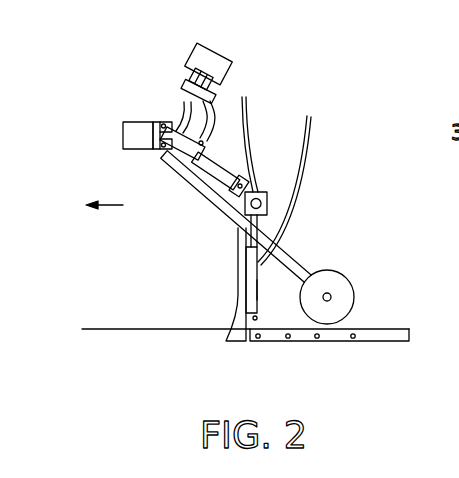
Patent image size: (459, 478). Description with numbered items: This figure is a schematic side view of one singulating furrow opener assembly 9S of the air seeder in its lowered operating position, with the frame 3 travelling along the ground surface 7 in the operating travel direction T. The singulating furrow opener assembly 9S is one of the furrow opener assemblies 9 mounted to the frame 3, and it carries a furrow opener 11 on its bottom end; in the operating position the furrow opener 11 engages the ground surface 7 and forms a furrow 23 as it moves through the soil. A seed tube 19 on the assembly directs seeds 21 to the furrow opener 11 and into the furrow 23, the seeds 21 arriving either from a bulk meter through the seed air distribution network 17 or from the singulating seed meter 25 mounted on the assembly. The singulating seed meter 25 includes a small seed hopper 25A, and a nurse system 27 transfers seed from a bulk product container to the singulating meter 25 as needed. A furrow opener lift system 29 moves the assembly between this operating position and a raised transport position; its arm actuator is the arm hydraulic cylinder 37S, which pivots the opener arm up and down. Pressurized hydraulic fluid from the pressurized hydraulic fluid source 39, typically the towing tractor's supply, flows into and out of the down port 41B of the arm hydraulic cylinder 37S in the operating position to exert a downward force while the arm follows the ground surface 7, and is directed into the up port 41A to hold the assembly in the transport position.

The frame 3 is at (123, 134).
The ground surface 7 is at (152, 329).
The furrow opener assembly 9 is at (212, 218).
The singulating furrow opener assembly 9S is at (203, 213).
The furrow opener 11 is at (232, 342).
The seed air distribution network 17 is at (311, 140).
The seed tube 19 is at (257, 320).
The seeds 21 is at (257, 289).
The furrow 23 is at (334, 338).
The singulating seed meter 25 is at (268, 206).
The small seed hopper 25A is at (267, 190).
The nurse system 27 is at (248, 126).
The furrow opener lift system 29 is at (216, 92).
The arm hydraulic cylinder of singulating furrow opener assembly 37S is at (178, 171).
The pressurized hydraulic fluid source 39 is at (224, 56).
The up port 41A is at (243, 114).
The down port 41B is at (182, 134).
The operating travel direction T is at (96, 207).